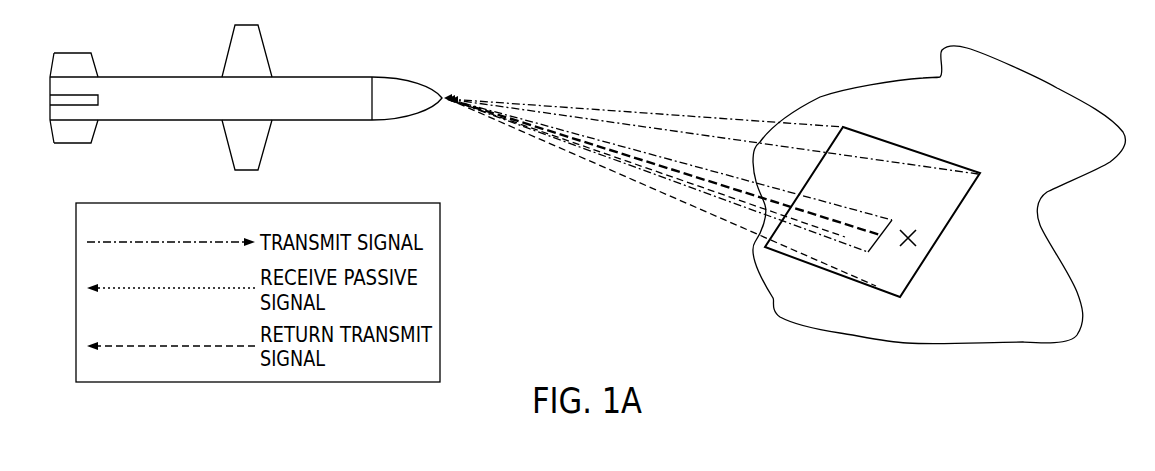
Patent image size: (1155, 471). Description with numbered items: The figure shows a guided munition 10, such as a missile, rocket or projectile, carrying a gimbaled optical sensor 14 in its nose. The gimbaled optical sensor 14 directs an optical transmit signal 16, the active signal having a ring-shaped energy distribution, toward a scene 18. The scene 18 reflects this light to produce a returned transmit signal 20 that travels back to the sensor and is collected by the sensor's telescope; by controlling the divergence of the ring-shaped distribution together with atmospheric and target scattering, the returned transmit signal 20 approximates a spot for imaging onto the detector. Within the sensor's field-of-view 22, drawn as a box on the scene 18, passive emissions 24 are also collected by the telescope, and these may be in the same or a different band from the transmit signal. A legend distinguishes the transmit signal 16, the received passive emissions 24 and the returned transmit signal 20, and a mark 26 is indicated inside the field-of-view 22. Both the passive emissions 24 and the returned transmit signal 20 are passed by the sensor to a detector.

The guided munition 10 is at (185, 77).
The gimbaled optical sensor 14 is at (403, 77).
The optical transmit signal 16 is at (837, 202).
The scene 18 is at (880, 80).
The returned transmit signal 20 is at (727, 192).
The field-of-view 22 is at (912, 148).
The passive emissions 24 is at (640, 113).
The aimpoint 26 is at (917, 238).